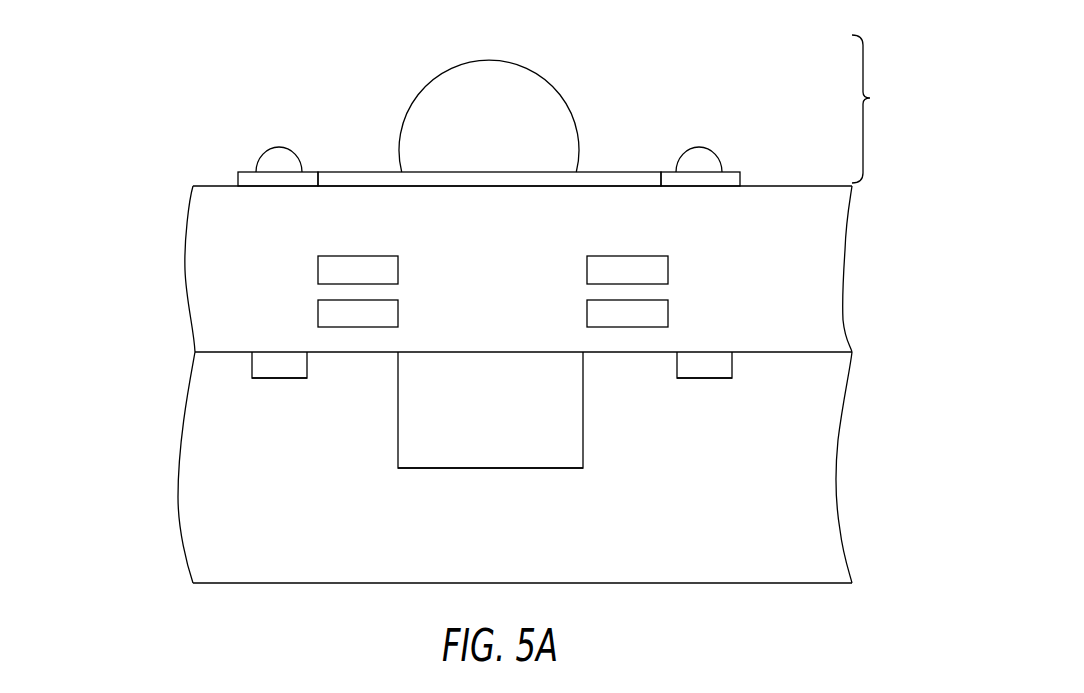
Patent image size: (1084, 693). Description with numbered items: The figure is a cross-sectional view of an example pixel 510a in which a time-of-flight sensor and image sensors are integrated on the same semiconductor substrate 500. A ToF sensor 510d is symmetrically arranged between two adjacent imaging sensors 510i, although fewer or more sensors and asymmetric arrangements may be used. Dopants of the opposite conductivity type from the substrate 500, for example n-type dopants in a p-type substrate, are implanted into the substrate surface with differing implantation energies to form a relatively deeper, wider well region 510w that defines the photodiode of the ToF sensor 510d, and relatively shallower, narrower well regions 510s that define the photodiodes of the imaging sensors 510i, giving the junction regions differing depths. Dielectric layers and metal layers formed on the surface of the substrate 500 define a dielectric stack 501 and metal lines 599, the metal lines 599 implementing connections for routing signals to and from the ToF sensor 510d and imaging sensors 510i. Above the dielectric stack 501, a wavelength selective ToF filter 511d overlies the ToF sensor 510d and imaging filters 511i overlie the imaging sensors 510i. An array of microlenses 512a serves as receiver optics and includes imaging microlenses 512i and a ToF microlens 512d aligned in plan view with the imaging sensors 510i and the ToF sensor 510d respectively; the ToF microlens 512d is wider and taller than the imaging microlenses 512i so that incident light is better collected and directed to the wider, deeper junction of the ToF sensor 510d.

The pixel 510a is at (150, 58).
The array of microlenses 512a is at (882, 109).
The imaging microlens 512i is at (792, 109).
The imaging filter 511i is at (692, 172).
The ToF filter 511d is at (440, 170).
The ToF microlens 512d is at (562, 118).
The dielectric stack 501 is at (788, 267).
The metal lines 599 is at (318, 313).
The semiconductor substrate 500 is at (796, 422).
The shallower, narrower well region 510s is at (290, 360).
The imaging sensor 510i is at (300, 380).
The deeper, wider well region 510w is at (468, 445).
The ToF sensor 510d is at (560, 468).